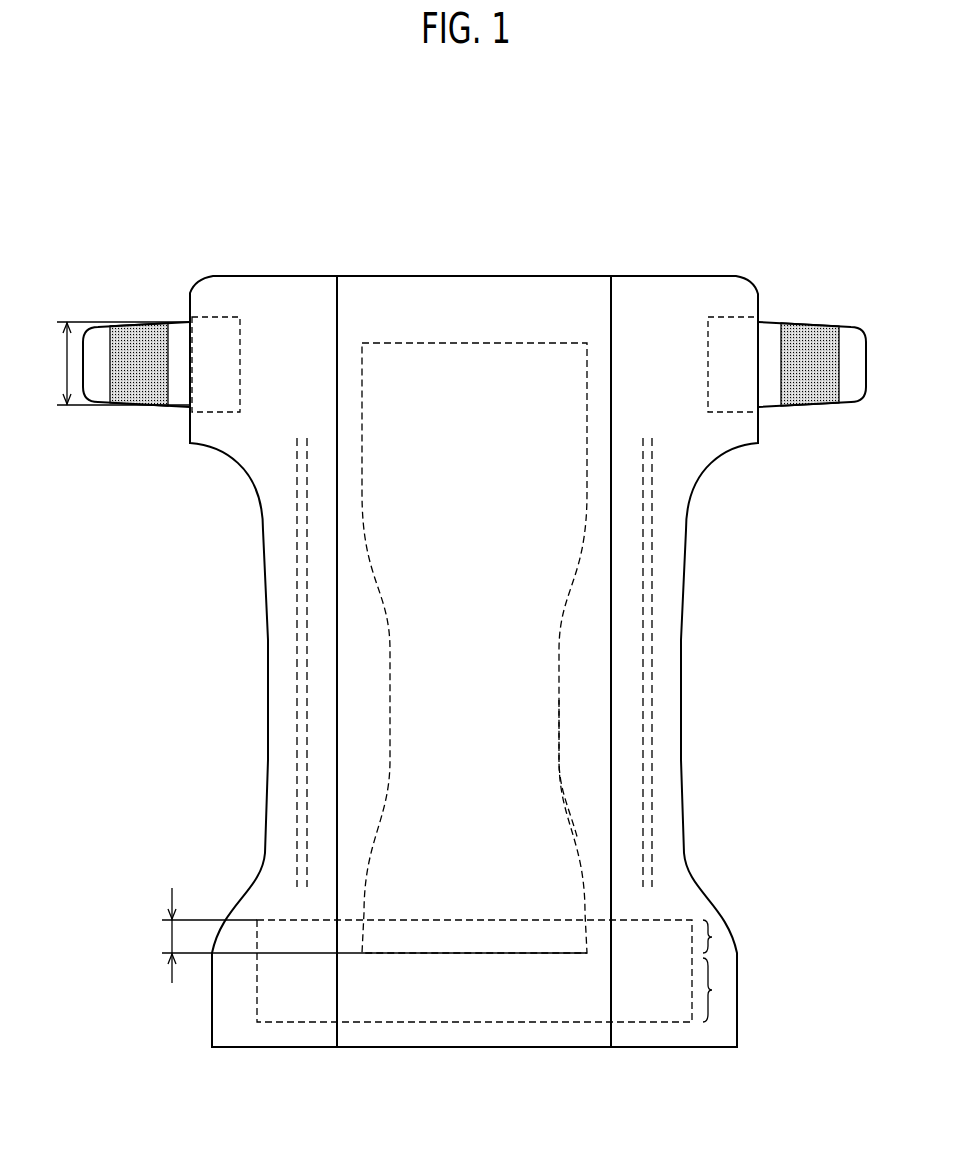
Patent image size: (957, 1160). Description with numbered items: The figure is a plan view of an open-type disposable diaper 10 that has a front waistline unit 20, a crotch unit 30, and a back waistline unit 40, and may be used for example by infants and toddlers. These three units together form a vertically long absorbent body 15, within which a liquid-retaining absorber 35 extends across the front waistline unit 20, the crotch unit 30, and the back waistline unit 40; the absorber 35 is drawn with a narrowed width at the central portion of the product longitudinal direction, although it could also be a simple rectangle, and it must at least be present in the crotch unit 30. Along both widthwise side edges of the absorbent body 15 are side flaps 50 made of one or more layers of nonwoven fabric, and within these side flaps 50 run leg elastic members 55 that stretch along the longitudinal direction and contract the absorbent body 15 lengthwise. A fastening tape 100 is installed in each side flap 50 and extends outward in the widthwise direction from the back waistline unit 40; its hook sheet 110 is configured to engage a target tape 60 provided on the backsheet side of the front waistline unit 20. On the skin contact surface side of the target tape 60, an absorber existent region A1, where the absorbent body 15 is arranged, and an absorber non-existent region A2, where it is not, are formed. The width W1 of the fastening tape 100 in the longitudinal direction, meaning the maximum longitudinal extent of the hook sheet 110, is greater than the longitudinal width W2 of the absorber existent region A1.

The disposable diaper 10 is at (755, 200).
The absorbent body 15 is at (373, 275).
The front waistline unit 20 is at (472, 1036).
The crotch unit 30 is at (582, 673).
The absorber 35 is at (558, 753).
The back waistline unit 40 is at (472, 293).
The side flap 50 is at (655, 293).
The leg elastic member 55 is at (653, 563).
The target tape 60 is at (663, 1023).
The fastening tape 100 is at (100, 414).
The hook sheet 110 is at (810, 332).
The width of fastening tape W1 is at (107, 363).
The width of absorber existent region W2 is at (357, 935).
The absorber existent region A1 is at (712, 937).
The absorber non-existent region A2 is at (712, 990).